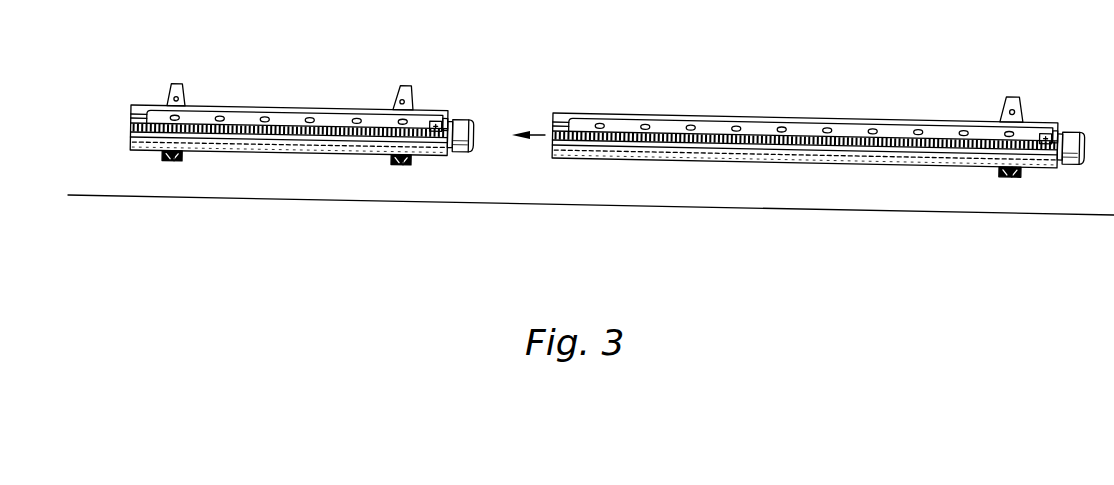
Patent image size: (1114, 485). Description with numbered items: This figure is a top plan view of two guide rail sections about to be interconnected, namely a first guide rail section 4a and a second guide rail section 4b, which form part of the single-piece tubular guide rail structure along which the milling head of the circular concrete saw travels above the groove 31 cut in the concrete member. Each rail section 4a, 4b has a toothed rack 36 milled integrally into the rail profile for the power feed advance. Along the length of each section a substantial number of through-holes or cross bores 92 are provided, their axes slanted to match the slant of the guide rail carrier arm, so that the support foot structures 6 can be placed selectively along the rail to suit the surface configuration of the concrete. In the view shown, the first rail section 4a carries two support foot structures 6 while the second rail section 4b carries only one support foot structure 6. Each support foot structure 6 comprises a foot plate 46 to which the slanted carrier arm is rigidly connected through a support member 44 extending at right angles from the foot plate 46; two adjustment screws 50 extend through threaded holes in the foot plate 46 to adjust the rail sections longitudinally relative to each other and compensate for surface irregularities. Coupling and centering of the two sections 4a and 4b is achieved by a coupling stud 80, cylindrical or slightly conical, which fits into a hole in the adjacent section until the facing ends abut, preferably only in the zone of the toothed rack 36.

The first guide rail section 4a is at (251, 97).
The second guide rail section 4b is at (757, 111).
The support foot structure 6 is at (179, 159).
The groove 31 is at (288, 201).
The toothed rack 36 is at (233, 135).
The support member 44 is at (172, 159).
The foot plate 46 is at (172, 97).
The adjustment screws 50 is at (178, 97).
The coupling stud 80 is at (462, 123).
The through-holes 92 is at (357, 115).